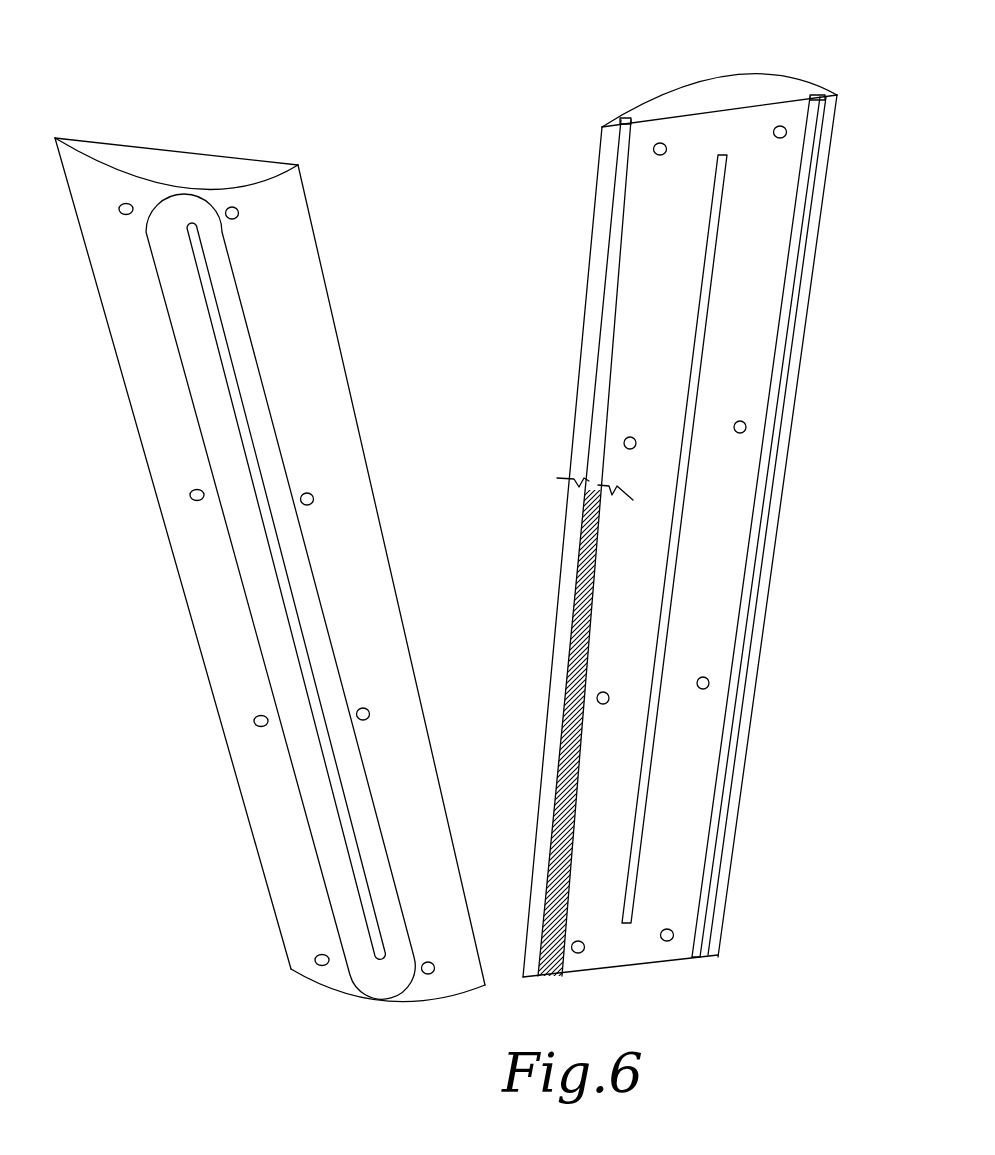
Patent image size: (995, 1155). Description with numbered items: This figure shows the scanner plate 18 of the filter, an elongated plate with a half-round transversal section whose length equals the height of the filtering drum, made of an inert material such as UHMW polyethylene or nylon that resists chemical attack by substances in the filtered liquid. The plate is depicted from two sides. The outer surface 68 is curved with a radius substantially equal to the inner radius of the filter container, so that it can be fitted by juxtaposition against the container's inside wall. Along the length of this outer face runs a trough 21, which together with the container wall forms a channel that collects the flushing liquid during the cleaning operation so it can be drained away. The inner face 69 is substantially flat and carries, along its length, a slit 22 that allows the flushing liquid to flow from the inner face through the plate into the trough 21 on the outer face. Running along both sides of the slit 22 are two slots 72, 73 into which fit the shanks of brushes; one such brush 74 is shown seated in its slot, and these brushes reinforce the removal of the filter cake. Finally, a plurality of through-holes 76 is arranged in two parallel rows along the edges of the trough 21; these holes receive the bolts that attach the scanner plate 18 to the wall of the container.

The scanner plate 18 is at (212, 165).
The trough 21 is at (202, 382).
The slit 22 is at (227, 362).
The outer surface 68 is at (328, 417).
The inner face 69 is at (697, 127).
The slot 72 is at (598, 390).
The slot 73 is at (727, 793).
The brush 74 is at (572, 697).
The through-holes 76 is at (254, 722).